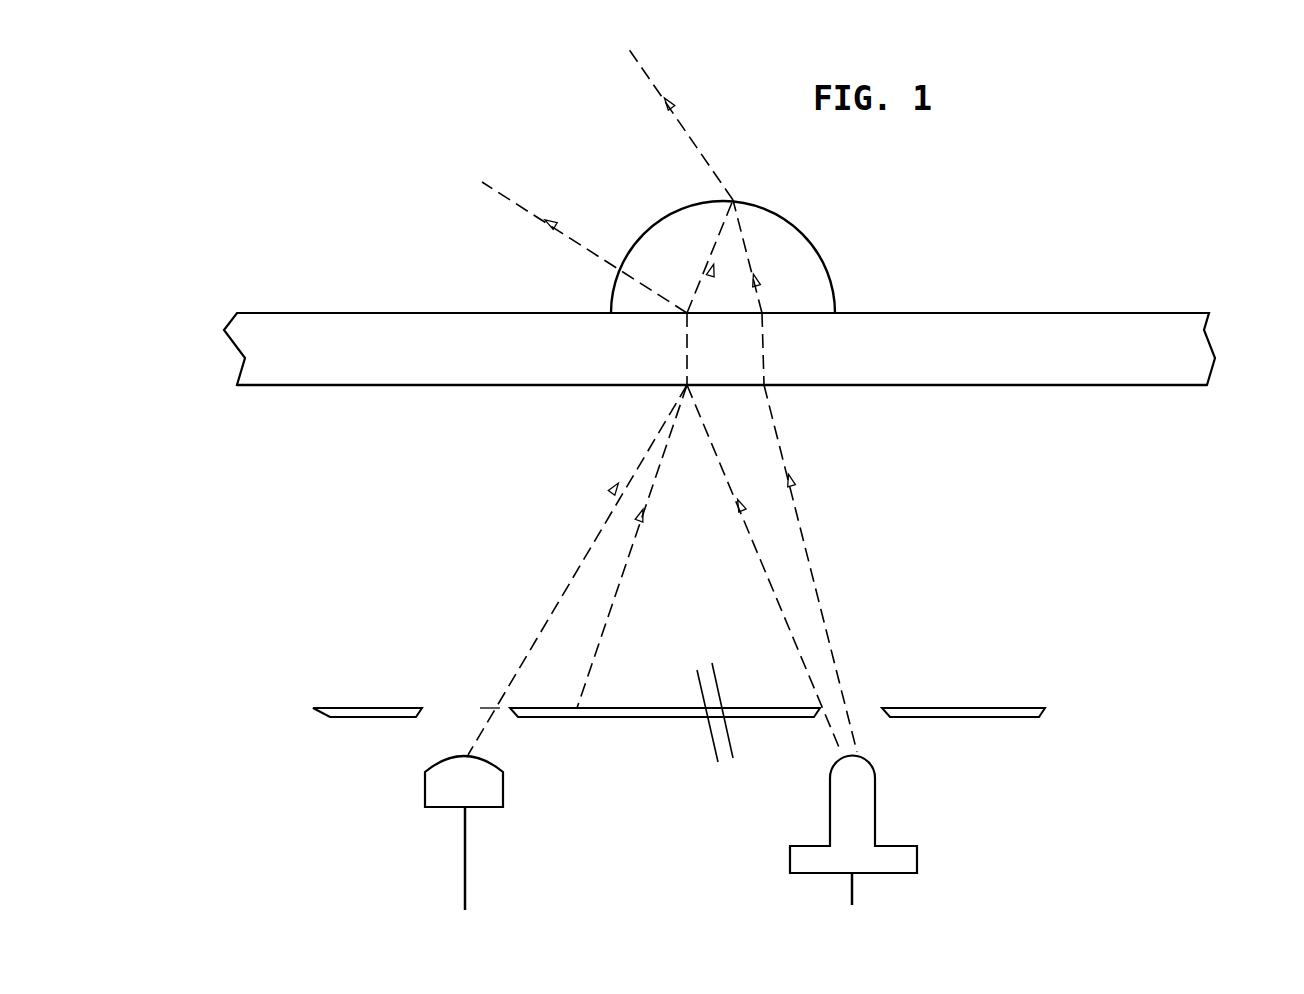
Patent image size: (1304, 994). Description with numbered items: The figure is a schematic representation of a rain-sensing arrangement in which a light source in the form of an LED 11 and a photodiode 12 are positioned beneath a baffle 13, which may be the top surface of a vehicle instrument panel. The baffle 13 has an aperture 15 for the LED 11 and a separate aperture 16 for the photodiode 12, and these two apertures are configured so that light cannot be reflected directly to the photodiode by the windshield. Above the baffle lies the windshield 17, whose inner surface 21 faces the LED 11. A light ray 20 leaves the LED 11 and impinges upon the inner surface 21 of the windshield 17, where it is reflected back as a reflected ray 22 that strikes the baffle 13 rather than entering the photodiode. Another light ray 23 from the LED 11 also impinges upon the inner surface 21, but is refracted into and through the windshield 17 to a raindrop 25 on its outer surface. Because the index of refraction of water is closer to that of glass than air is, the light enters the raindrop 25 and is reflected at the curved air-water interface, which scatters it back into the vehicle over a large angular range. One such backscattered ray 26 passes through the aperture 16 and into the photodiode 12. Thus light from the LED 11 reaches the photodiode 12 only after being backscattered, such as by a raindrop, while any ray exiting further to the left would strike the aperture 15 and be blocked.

The LED 11 is at (917, 848).
The photodiode 12 is at (503, 787).
The baffle 13 is at (378, 708).
The aperture 15 is at (857, 710).
The aperture 16 is at (453, 708).
The windshield 17 is at (1198, 357).
The light ray 20 is at (775, 585).
The inner surface 21 is at (1085, 385).
The reflected ray 22 is at (628, 552).
The light ray 23 is at (810, 565).
The raindrop 25 is at (818, 256).
The backscattered ray 26 is at (603, 515).